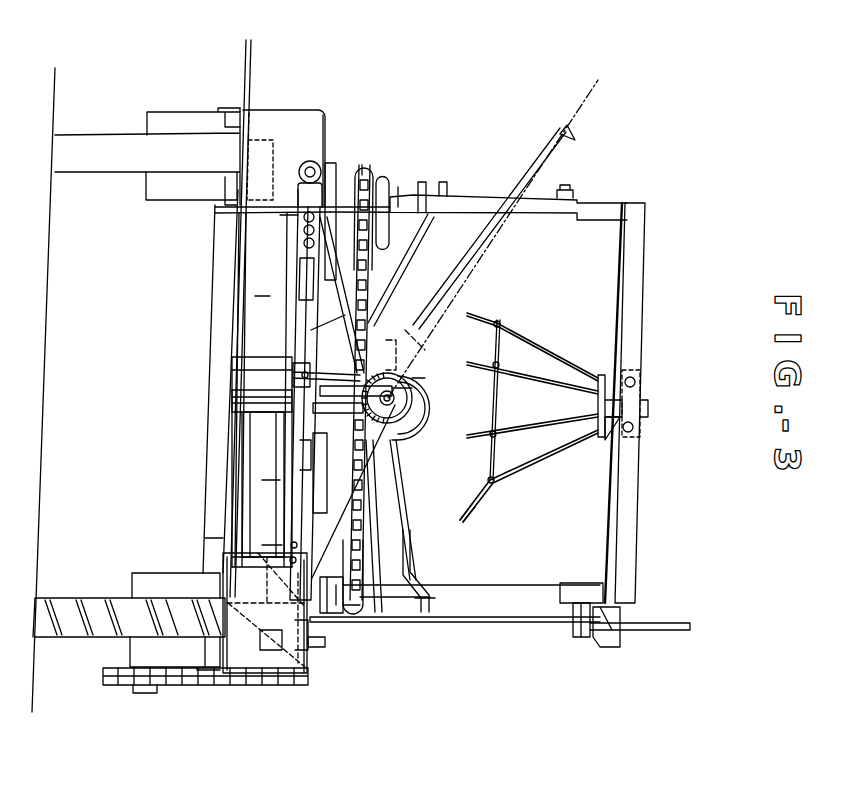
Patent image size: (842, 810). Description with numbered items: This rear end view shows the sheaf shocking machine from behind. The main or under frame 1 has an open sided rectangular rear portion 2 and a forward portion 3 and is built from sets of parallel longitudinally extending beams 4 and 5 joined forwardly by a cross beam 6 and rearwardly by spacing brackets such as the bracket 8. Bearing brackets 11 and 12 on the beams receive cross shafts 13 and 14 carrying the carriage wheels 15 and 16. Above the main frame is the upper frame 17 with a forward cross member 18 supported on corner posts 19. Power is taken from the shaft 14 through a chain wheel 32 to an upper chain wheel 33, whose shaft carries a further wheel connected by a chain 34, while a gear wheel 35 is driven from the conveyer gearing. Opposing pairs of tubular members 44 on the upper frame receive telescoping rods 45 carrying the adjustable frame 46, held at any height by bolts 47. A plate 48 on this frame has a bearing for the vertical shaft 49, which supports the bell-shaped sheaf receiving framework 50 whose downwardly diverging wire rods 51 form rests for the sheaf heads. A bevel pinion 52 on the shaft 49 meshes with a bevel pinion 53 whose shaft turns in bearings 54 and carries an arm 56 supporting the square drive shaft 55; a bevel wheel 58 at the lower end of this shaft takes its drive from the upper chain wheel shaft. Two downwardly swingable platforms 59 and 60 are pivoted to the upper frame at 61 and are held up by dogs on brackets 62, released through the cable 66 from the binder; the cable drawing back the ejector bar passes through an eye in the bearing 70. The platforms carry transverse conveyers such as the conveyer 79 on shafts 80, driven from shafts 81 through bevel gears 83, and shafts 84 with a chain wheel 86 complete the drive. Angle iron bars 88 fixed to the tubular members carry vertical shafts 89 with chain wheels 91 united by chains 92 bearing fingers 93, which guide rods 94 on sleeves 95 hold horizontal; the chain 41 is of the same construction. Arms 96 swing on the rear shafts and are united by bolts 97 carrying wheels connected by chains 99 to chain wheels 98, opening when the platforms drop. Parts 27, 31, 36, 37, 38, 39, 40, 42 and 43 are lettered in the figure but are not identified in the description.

The main or under frame 1 is at (217, 207).
The rear portion 2 is at (276, 130).
The forward portion 3 is at (315, 110).
The longitudinally extending beam 4 is at (205, 540).
The longitudinally extending beam 5 is at (235, 110).
The cross beam 6 is at (233, 398).
The spacing bracket 8 is at (250, 688).
The bearing bracket 11 is at (167, 130).
The bearing bracket 12 is at (162, 195).
The cross shaft 13 is at (148, 118).
The cross shaft 14 is at (140, 687).
The carriage wheel 15 is at (82, 160).
The carriage wheel 16 is at (60, 599).
The upper frame 17 is at (132, 652).
The cross member 18 is at (275, 548).
The corner post 19 is at (236, 382).
The lever 27 is at (262, 302).
The pin 31 is at (272, 500).
The chain wheel 32 is at (150, 694).
The upper chain wheel 33 is at (262, 700).
The chain 34 is at (417, 394).
The gear wheel 35 is at (205, 525).
The pin 36 is at (418, 335).
The hook arm 37 is at (405, 442).
The roller 38 is at (302, 246).
The shaft 39 is at (392, 340).
The bracket 40 is at (236, 370).
The chain 41 is at (530, 185).
The pin 42 is at (420, 380).
The sprocket wheel 43 is at (412, 425).
The tubular member 44 is at (481, 196).
The telescoping rod 45 is at (600, 292).
The adjustable frame 46 is at (620, 337).
The adjustable bolt 47 is at (563, 186).
The plate 48 is at (636, 430).
The shaft 49 is at (650, 410).
The sheaf receiving framework 50 is at (495, 395).
The wire rod 51 is at (507, 478).
The bevel pinion 52 is at (644, 403).
The bevel pinion 53 is at (631, 440).
The bearing 54 is at (600, 437).
The square drive shaft 55 is at (262, 638).
The arm 56 is at (350, 614).
The bevel wheel 58 is at (262, 602).
The swingable platform 59 is at (238, 300).
The swingable platform 60 is at (247, 68).
The pivot 61 is at (295, 190).
The bracket 62 is at (312, 460).
The cable 66 is at (232, 358).
The bearing 70 is at (268, 405).
The transversely extending conveyer 79 is at (285, 520).
The longitudinally extending shaft 80 is at (332, 246).
The longitudinally extending shaft 81 is at (304, 229).
The bevel gear 83 is at (298, 178).
The shaft 84 is at (300, 168).
The chain wheel 86 is at (290, 218).
The angle iron bar 88 is at (444, 180).
The vertical shaft 89 is at (428, 180).
The chain wheel 91 is at (400, 185).
The chain 92 is at (343, 312).
The finger 93 is at (392, 480).
The guide rod 94 is at (396, 520).
The sleeve 95 is at (362, 185).
The arm 96 is at (316, 160).
The bolt 97 is at (390, 170).
The chain wheel 98 is at (366, 165).
The chain 99 is at (300, 262).